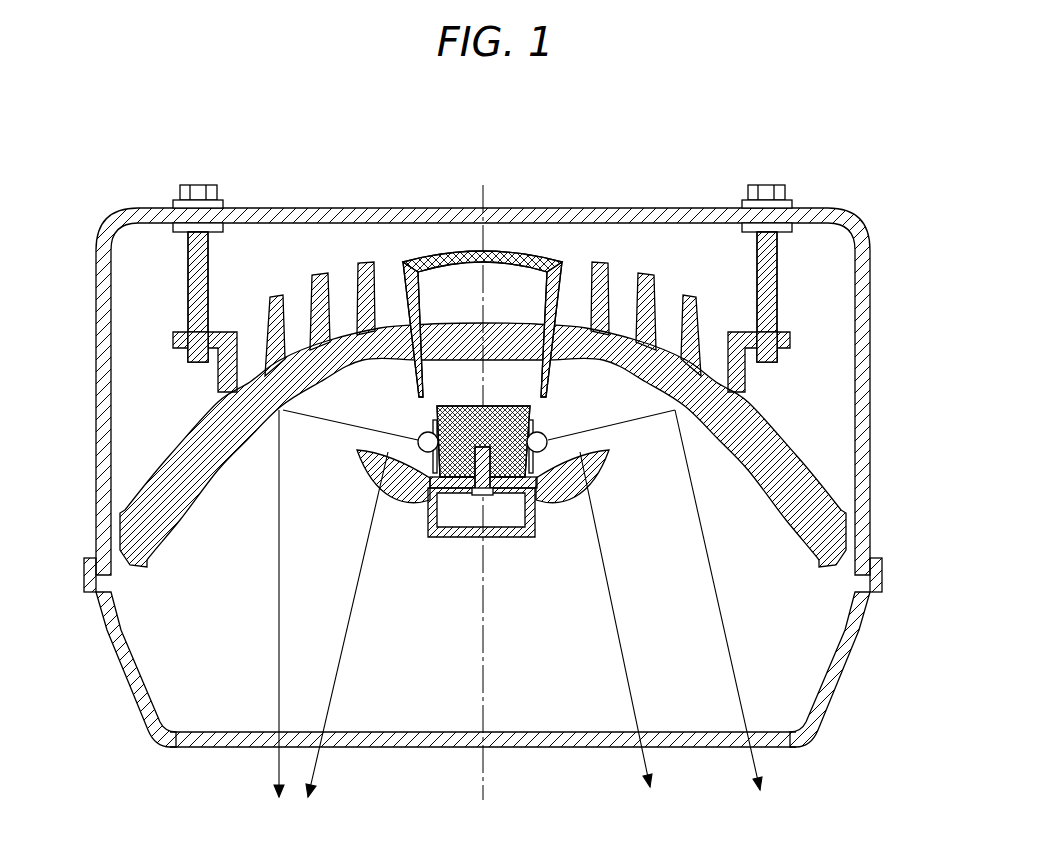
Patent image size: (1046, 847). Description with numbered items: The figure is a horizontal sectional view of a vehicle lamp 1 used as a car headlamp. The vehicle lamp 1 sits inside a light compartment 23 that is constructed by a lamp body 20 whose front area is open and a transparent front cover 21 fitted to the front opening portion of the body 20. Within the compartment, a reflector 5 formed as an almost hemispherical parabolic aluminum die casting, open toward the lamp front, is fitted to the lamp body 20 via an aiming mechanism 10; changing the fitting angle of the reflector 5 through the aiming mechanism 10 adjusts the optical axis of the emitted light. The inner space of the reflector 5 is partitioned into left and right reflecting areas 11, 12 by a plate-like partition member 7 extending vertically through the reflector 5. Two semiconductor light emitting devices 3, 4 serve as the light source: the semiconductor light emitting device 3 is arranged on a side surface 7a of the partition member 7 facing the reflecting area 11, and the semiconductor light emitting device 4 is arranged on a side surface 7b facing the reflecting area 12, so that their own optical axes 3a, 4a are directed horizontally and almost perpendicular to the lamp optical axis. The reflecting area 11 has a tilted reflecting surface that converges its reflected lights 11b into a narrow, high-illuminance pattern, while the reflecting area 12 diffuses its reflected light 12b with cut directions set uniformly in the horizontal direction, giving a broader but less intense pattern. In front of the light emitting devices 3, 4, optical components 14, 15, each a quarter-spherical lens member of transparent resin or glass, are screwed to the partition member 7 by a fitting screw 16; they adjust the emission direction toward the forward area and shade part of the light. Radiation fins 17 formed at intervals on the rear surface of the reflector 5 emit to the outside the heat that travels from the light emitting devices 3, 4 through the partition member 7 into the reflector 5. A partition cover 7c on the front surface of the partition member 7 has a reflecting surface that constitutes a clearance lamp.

The vehicle lamp 1 is at (385, 250).
The semiconductor light emitting device 3 is at (415, 428).
The optical axis 3a is at (416, 446).
The semiconductor light emitting device 4 is at (543, 422).
The optical axis 4a is at (552, 446).
The reflector 5 is at (483, 456).
The plate-like partition member 7 is at (502, 406).
The side surface 7a is at (420, 407).
The side surface 7b is at (540, 403).
The partition cover 7c is at (496, 538).
The aiming mechanism 10 is at (186, 265).
The reflecting area 11 is at (217, 473).
The reflected lights 11b is at (278, 632).
The reflecting area 12 is at (772, 505).
The reflected light 12b is at (717, 600).
The optical component 14 is at (403, 510).
The optical component 15 is at (557, 513).
The fitting screw 16 is at (474, 495).
The radiation fins 17 is at (312, 290).
The lamp body 20 is at (875, 400).
The front cover 21 is at (133, 703).
The light compartment 23 is at (567, 712).